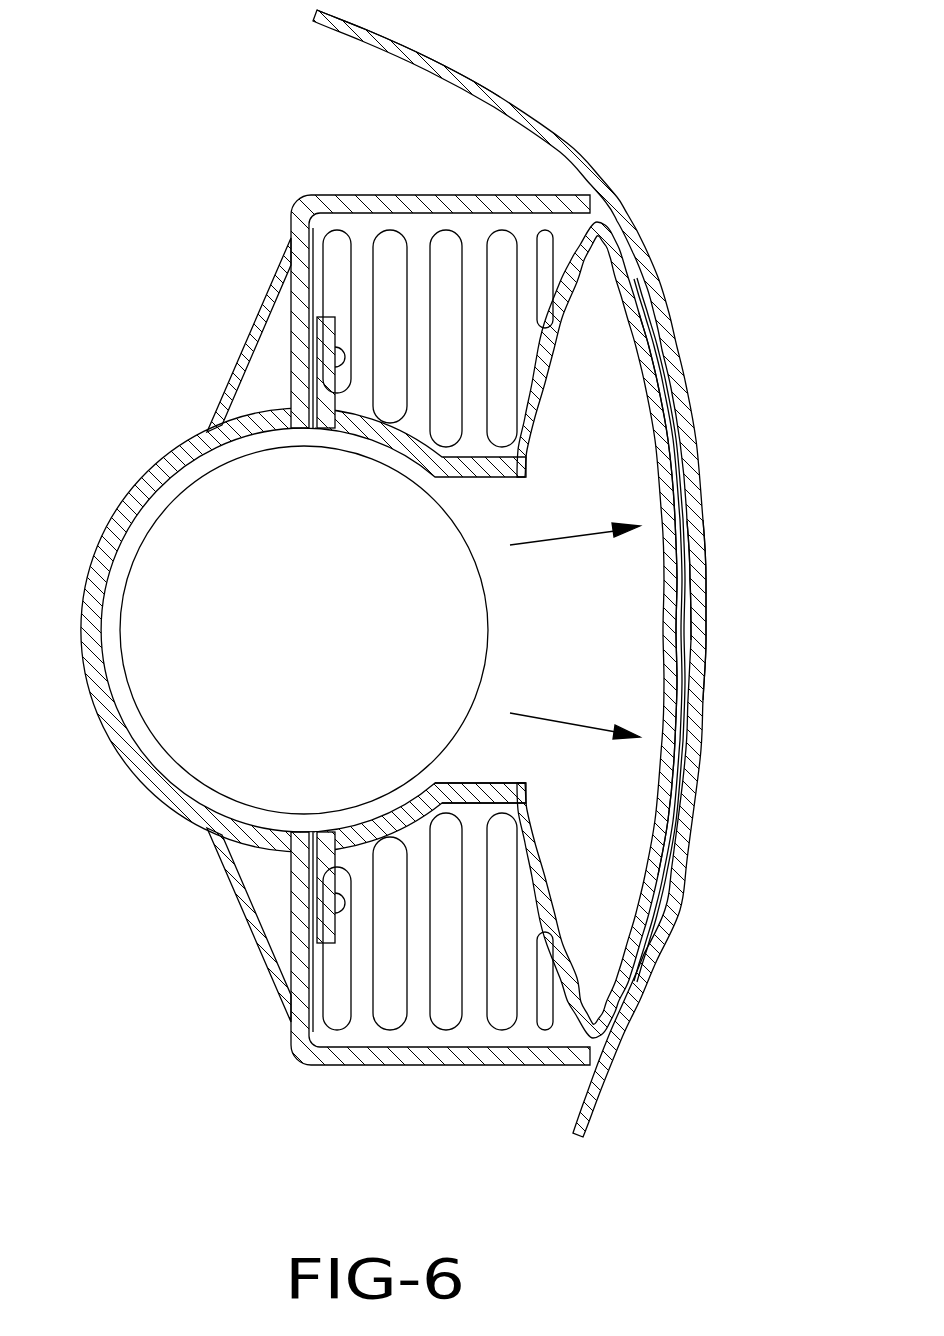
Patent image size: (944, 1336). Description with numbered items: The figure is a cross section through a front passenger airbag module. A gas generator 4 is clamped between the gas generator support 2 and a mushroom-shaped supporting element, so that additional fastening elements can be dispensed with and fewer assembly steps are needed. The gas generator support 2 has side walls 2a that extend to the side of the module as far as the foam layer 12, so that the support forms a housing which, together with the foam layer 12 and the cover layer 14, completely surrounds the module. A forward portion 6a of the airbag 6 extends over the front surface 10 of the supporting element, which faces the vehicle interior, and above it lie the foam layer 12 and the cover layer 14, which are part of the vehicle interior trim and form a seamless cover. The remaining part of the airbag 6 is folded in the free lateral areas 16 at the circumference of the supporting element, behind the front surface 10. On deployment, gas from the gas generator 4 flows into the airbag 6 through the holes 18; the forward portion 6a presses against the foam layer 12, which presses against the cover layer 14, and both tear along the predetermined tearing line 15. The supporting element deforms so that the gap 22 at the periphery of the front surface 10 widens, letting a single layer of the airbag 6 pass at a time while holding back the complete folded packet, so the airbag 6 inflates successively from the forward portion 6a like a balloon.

The gas generator support 2 is at (258, 935).
The side walls 2a is at (345, 197).
The gas generator 4 is at (218, 552).
The airbag 6 is at (460, 1025).
The forward portion of the airbag 6a is at (678, 763).
The front surface 10 is at (674, 555).
The foam layer 12 is at (400, 52).
The cover layer 14 is at (632, 215).
The predetermined tearing line 15 is at (690, 628).
The free lateral areas 16 is at (462, 222).
The holes 18 is at (636, 312).
The gap 22 is at (598, 220).